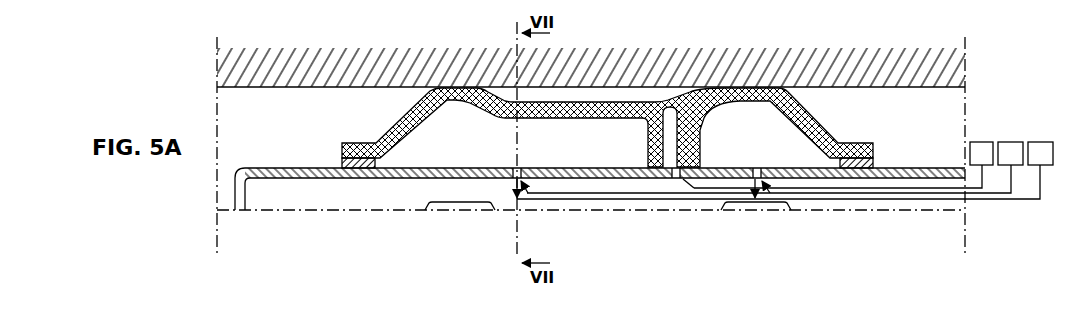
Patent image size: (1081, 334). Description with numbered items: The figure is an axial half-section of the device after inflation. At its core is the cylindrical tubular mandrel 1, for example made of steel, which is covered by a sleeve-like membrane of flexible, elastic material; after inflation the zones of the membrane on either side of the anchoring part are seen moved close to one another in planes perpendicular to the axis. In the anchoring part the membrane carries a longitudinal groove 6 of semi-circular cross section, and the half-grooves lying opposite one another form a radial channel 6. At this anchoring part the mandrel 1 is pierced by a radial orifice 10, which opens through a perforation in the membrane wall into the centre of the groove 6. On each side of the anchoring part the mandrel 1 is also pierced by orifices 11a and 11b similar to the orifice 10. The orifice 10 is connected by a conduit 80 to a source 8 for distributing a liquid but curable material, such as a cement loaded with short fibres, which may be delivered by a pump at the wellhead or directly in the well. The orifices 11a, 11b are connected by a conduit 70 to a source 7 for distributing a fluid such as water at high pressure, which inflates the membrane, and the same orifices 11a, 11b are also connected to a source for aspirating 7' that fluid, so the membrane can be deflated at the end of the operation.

The mandrel 1 is at (919, 166).
The groove 6 is at (684, 112).
The source for distributing fluid 7 is at (981, 153).
The source for aspirating fluid 7' is at (1040, 153).
The source for distributing curable material 8 is at (1010, 153).
The radial orifice 10 is at (676, 181).
The orifice 11a is at (520, 167).
The orifice 11b is at (757, 167).
The conduit 70 is at (577, 198).
The conduit 80 is at (898, 186).